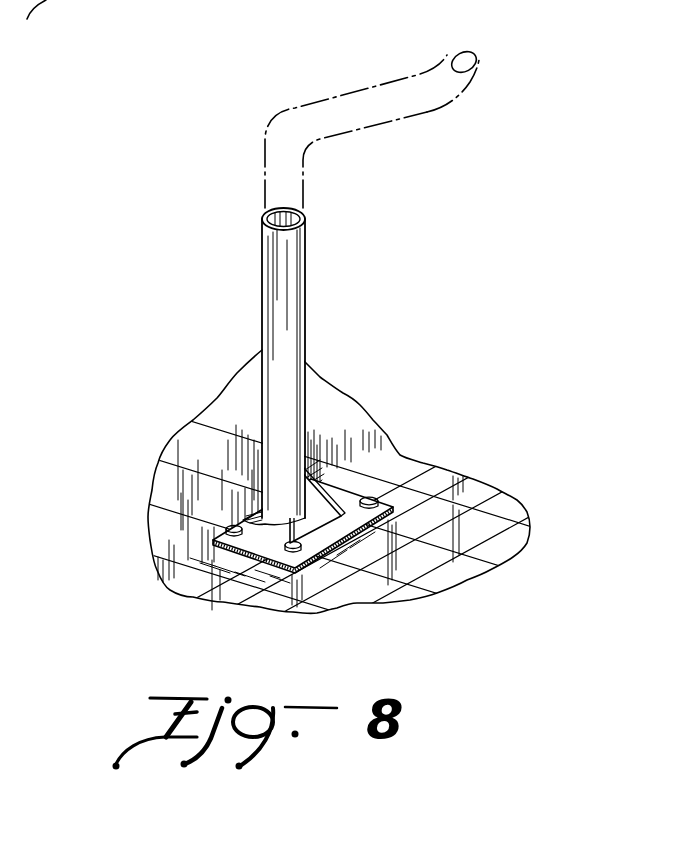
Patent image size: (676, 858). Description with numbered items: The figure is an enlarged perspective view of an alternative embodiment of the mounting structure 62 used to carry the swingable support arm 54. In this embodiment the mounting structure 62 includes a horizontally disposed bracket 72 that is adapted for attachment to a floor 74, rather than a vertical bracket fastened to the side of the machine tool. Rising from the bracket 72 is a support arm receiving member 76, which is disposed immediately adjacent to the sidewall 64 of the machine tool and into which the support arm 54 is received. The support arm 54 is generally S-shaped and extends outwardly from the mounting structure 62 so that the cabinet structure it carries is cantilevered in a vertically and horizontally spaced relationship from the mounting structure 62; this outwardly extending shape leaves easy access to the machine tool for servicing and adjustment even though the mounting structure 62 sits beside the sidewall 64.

The support arm 54 is at (427, 112).
The mounting structure 62 is at (275, 366).
The sidewall 64 is at (193, 489).
The horizontally disposed bracket 72 is at (384, 505).
The floor 74 is at (478, 523).
The support arm receiving member 76 is at (262, 312).